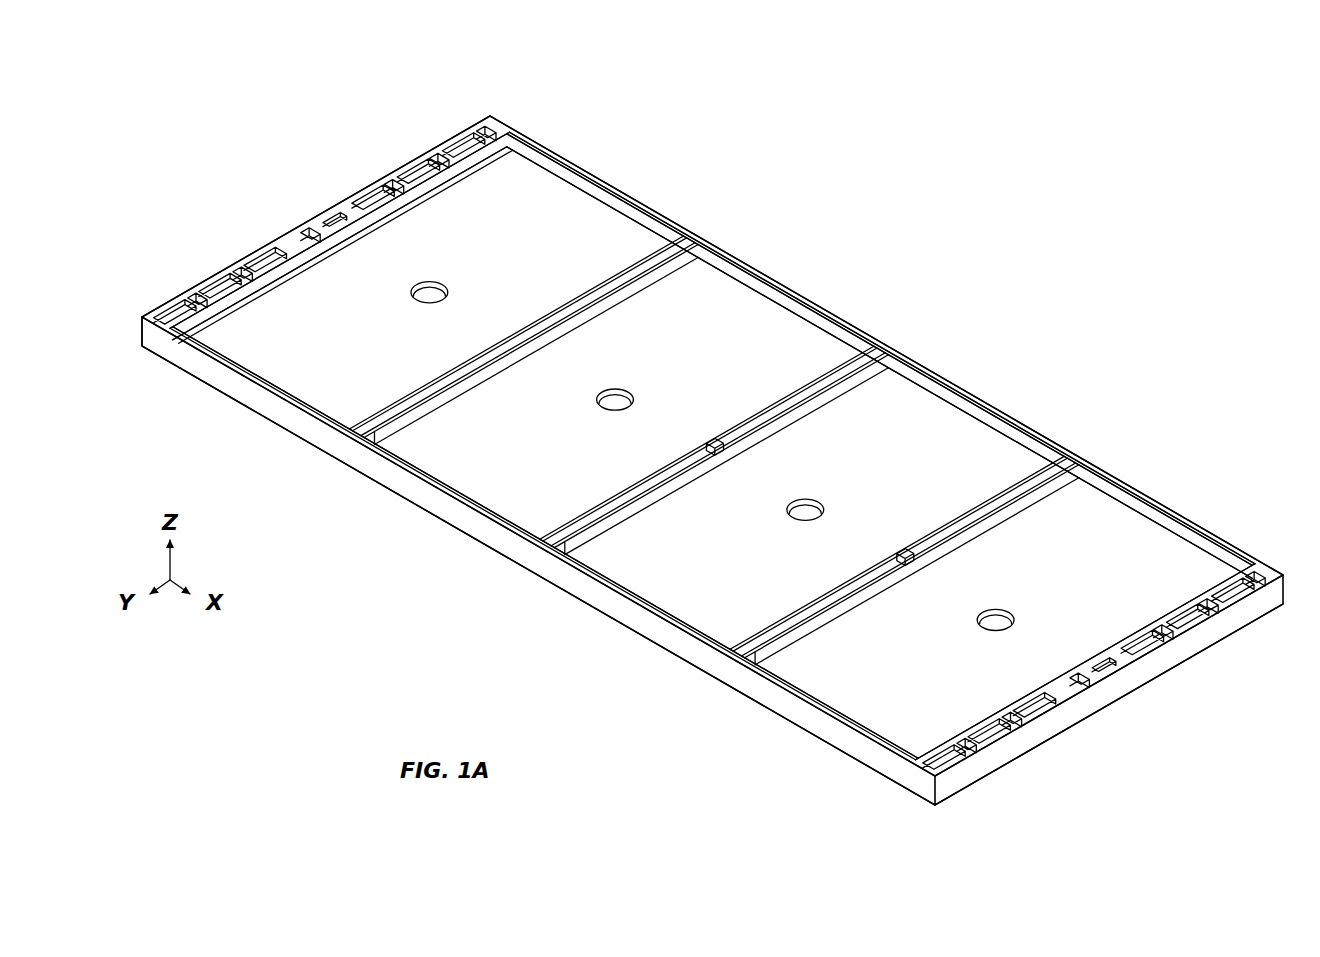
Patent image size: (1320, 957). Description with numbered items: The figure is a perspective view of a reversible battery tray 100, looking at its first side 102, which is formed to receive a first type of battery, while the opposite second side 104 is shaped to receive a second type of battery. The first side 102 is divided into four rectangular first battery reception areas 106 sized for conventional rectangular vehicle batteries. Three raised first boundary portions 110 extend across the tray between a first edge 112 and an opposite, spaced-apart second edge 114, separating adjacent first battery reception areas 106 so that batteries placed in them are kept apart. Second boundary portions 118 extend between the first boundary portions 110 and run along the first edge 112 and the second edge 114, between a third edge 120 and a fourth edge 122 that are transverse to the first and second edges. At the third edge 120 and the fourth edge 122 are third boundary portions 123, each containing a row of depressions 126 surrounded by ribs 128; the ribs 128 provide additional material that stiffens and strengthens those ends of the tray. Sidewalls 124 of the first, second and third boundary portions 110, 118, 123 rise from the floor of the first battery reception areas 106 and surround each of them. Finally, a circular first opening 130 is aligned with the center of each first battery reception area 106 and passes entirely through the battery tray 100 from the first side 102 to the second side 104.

The battery tray 100 is at (712, 460).
The first side 102 is at (1147, 535).
The second side 104 is at (247, 410).
The first battery reception area 106 is at (369, 310).
The first boundary portion 110 is at (627, 281).
The first edge 112 is at (556, 578).
The second edge 114 is at (1062, 440).
The second boundary portion 118 is at (605, 190).
The third edge 120 is at (1182, 658).
The fourth edge 122 is at (268, 245).
The third boundary portion 123 is at (442, 178).
The sidewall 124 is at (227, 305).
The depression 126 is at (276, 258).
The rib 128 is at (988, 738).
The first opening 130 is at (447, 292).